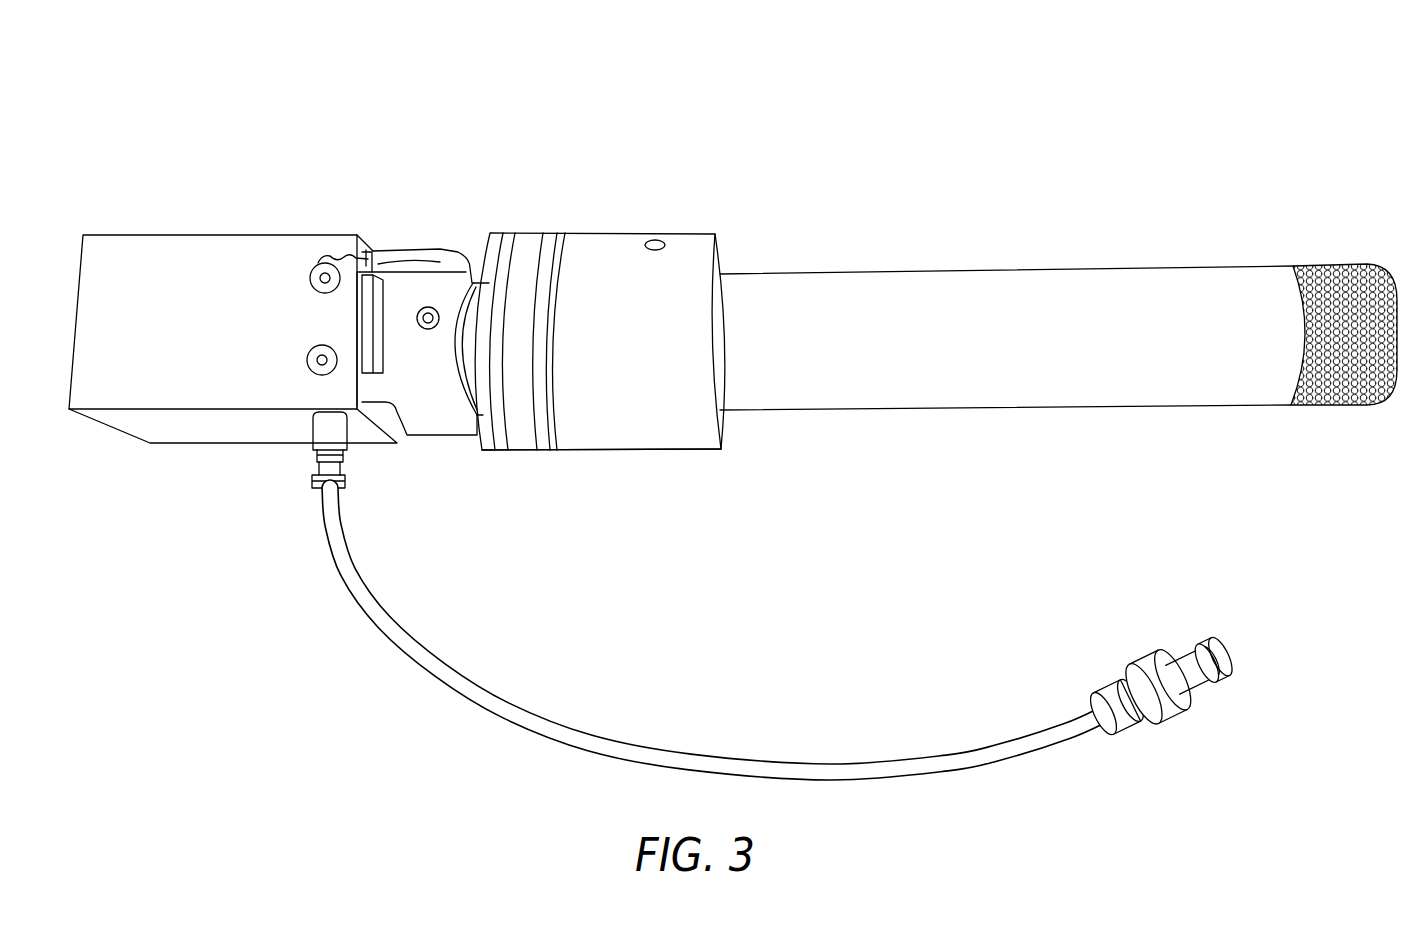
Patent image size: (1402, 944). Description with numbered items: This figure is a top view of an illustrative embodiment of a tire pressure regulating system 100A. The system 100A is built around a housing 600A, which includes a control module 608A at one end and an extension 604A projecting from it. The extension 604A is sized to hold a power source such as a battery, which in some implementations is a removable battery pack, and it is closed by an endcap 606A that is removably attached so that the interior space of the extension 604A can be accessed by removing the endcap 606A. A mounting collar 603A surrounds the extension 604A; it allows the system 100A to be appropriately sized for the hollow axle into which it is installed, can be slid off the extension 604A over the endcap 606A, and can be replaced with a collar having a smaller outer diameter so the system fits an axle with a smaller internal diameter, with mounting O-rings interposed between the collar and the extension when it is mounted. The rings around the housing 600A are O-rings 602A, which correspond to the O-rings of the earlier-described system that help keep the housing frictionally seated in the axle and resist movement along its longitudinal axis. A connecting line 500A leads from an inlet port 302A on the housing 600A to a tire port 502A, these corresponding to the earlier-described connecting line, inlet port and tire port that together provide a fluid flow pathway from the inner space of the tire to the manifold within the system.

The tire pressure regulating system 100A is at (598, 136).
The control module 608A is at (178, 257).
The cable connector 302A is at (325, 437).
The cable 500A is at (357, 572).
The cable plug connector 502A is at (1178, 706).
The housing 600A is at (692, 271).
The housing ribs 602A is at (510, 240).
The mounting collar 603A is at (640, 435).
The extension 604A is at (948, 285).
The endcap 606A is at (1345, 290).